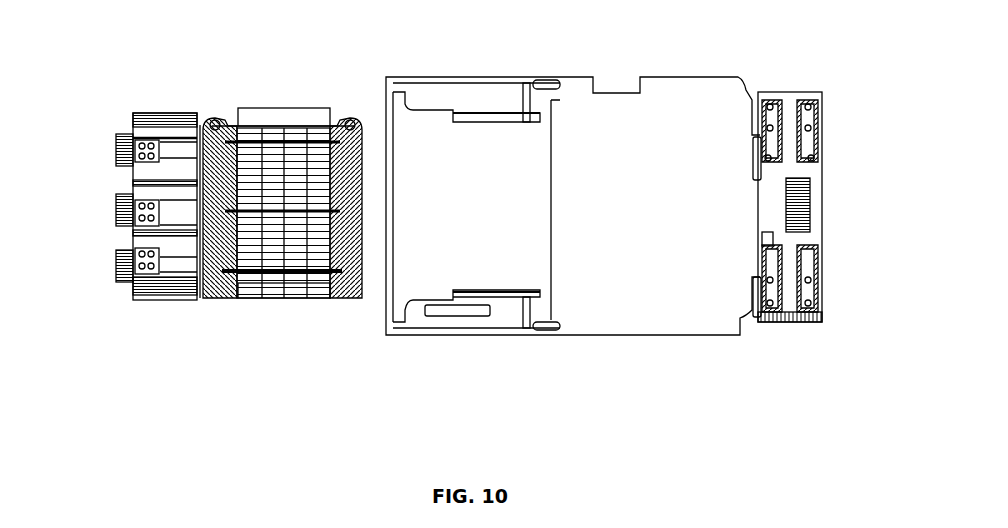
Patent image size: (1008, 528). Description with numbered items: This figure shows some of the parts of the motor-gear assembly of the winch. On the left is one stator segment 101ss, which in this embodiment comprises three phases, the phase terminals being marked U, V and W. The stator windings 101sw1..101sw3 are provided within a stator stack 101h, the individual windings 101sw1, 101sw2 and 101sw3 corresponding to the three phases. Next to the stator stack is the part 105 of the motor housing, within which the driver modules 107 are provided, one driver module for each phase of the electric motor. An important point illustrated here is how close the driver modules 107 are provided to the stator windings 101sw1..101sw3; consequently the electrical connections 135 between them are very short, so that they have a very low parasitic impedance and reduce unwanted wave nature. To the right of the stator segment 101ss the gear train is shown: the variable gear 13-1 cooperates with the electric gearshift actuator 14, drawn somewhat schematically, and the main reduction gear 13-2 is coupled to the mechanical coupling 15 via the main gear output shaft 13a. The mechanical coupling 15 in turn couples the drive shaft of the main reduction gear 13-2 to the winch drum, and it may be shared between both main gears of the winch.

The part of the motor housing 105 is at (168, 116).
The driver modules 107 is at (103, 209).
The U-phase terminal U is at (104, 157).
The V-phase terminal V is at (104, 215).
The W-phase terminal W is at (104, 275).
The stator stack 101h is at (316, 120).
The electrical connections 135 is at (211, 308).
The stator segment 101ss is at (286, 318).
The stator windings 101sw1..101sw3 is at (312, 236).
The stator winding 101sw1 is at (312, 236).
The stator winding 101sw2 is at (312, 236).
The stator winding 101sw3 is at (312, 236).
The electric gearshift actuator 14 is at (471, 333).
The variable gear 13-1 is at (525, 257).
The main reduction gear 13-2 is at (662, 275).
The main gear output shaft 13a is at (778, 212).
The mechanical coupling 15 is at (792, 268).